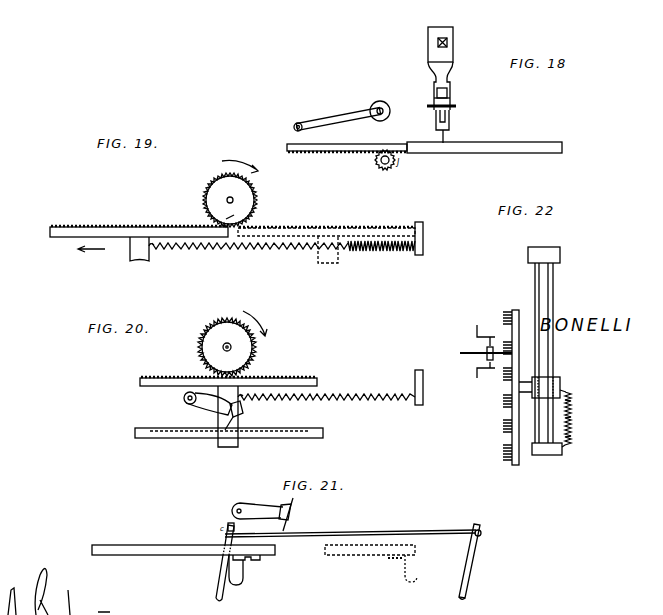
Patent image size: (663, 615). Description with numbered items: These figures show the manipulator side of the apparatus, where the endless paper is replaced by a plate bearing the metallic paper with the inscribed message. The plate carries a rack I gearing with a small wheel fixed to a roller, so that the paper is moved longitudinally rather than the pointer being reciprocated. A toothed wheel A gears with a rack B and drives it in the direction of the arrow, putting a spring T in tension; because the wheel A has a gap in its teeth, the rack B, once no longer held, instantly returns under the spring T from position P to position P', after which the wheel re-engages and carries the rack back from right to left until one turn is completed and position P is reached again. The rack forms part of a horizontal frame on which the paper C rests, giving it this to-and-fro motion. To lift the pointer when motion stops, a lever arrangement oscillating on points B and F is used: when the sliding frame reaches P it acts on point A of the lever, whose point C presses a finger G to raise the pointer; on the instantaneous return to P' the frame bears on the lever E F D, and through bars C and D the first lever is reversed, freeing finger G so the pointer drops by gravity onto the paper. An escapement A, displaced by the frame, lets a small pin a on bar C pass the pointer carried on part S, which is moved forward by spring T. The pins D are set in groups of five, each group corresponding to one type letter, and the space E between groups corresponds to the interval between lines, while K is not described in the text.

In FIG. 18, the spring T is at (441, 85).
In FIG. 19, the spring T is at (282, 253).
In FIG. 22, the spring T is at (571, 418).
In FIG. 18, the paper C is at (342, 111).
In FIG. 20, the paper C is at (229, 428).
In FIG. 22, the paper C is at (515, 387).
In FIG. 18, the rack I is at (347, 154).
In FIG. 19, the position P is at (139, 225).
In FIG. 21, the position P is at (183, 557).
In FIG. 19, the position P' is at (326, 237).
In FIG. 21, the position P' is at (371, 563).
In FIG. 19, the rack B is at (144, 237).
In FIG. 20, the rack B is at (228, 375).
In FIG. 21, the rack B is at (234, 570).
In FIG. 22, the rack B is at (546, 387).
In FIG. 19, the toothed wheel A is at (230, 200).
In FIG. 20, the toothed wheel A is at (227, 347).
In FIG. 21, the toothed wheel A is at (217, 567).
In FIG. 22, the toothed wheel A is at (493, 357).
In FIG. 19, the pawl K is at (230, 219).
In FIG. 20, the pawl K is at (244, 323).
In FIG. 20, the part S is at (217, 411).
In FIG. 21, the finger G is at (238, 528).
In FIG. 21, the pins D is at (483, 532).
In FIG. 22, the pins D is at (502, 426).
In FIG. 21, the oscillation point F is at (471, 561).
In FIG. 21, the space E is at (466, 593).
In FIG. 22, the space E is at (504, 450).
In FIG. 22, the small pin a is at (485, 360).